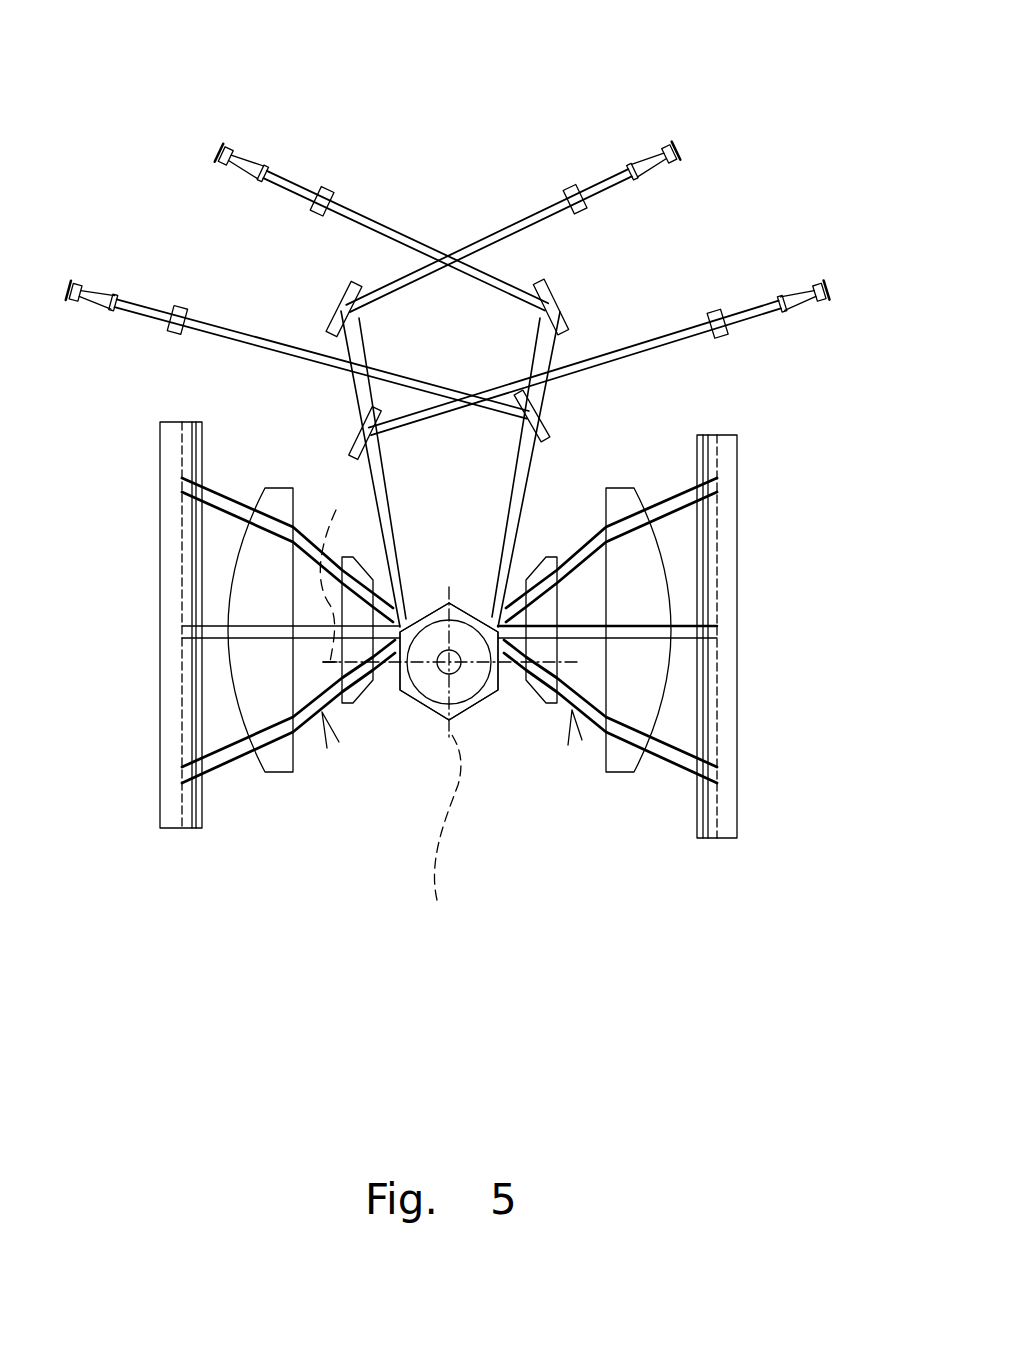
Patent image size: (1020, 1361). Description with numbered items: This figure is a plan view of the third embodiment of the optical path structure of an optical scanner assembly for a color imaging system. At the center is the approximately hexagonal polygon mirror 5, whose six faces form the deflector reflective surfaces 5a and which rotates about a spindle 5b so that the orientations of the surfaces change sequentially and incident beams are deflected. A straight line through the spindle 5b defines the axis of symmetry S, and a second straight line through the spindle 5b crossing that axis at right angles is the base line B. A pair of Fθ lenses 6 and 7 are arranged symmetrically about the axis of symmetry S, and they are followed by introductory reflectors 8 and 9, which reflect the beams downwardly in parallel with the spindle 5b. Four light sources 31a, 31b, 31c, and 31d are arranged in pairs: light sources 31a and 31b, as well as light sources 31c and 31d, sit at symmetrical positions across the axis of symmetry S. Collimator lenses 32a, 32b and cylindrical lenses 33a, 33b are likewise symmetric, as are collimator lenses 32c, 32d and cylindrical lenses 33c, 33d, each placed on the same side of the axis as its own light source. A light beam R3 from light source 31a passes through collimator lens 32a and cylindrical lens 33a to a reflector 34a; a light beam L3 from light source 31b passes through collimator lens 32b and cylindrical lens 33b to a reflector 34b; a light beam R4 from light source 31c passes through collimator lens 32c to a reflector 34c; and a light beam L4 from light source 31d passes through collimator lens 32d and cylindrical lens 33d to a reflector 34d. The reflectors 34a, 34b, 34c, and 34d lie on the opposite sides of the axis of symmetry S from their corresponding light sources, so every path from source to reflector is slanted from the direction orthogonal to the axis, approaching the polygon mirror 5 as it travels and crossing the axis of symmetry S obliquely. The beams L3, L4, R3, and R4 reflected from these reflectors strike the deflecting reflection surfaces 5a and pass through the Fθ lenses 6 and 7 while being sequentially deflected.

The polygon mirror 5 is at (463, 712).
The deflector reflective surfaces 5a is at (432, 612).
The spindle 5b is at (440, 674).
The Fθ lens 6 is at (327, 748).
The Fθ lens 7 is at (580, 745).
The introductory reflector 8 is at (173, 657).
The introductory reflector 9 is at (725, 678).
The light source 31a is at (221, 158).
The light source 31b is at (666, 143).
The light source 31c is at (80, 285).
The light source 31d is at (822, 305).
The collimator lens 32a is at (262, 164).
The collimator lens 32b is at (631, 163).
The collimator lens 32c is at (107, 314).
The collimator lens 32d is at (782, 292).
The cylindrical lens 33a is at (323, 186).
The cylindrical lens 33b is at (573, 186).
The cylindrical lens 33c is at (178, 306).
The cylindrical lens 33d is at (725, 336).
The reflector 34a is at (558, 300).
The reflector 34b is at (355, 280).
The reflector 34c is at (545, 445).
The reflector 34d is at (352, 428).
The light beam R3 is at (378, 226).
The light beam L3 is at (531, 222).
The light beam R4 is at (259, 338).
The light beam L4 is at (604, 353).
The base line B is at (332, 567).
The axis of symmetry S is at (445, 843).